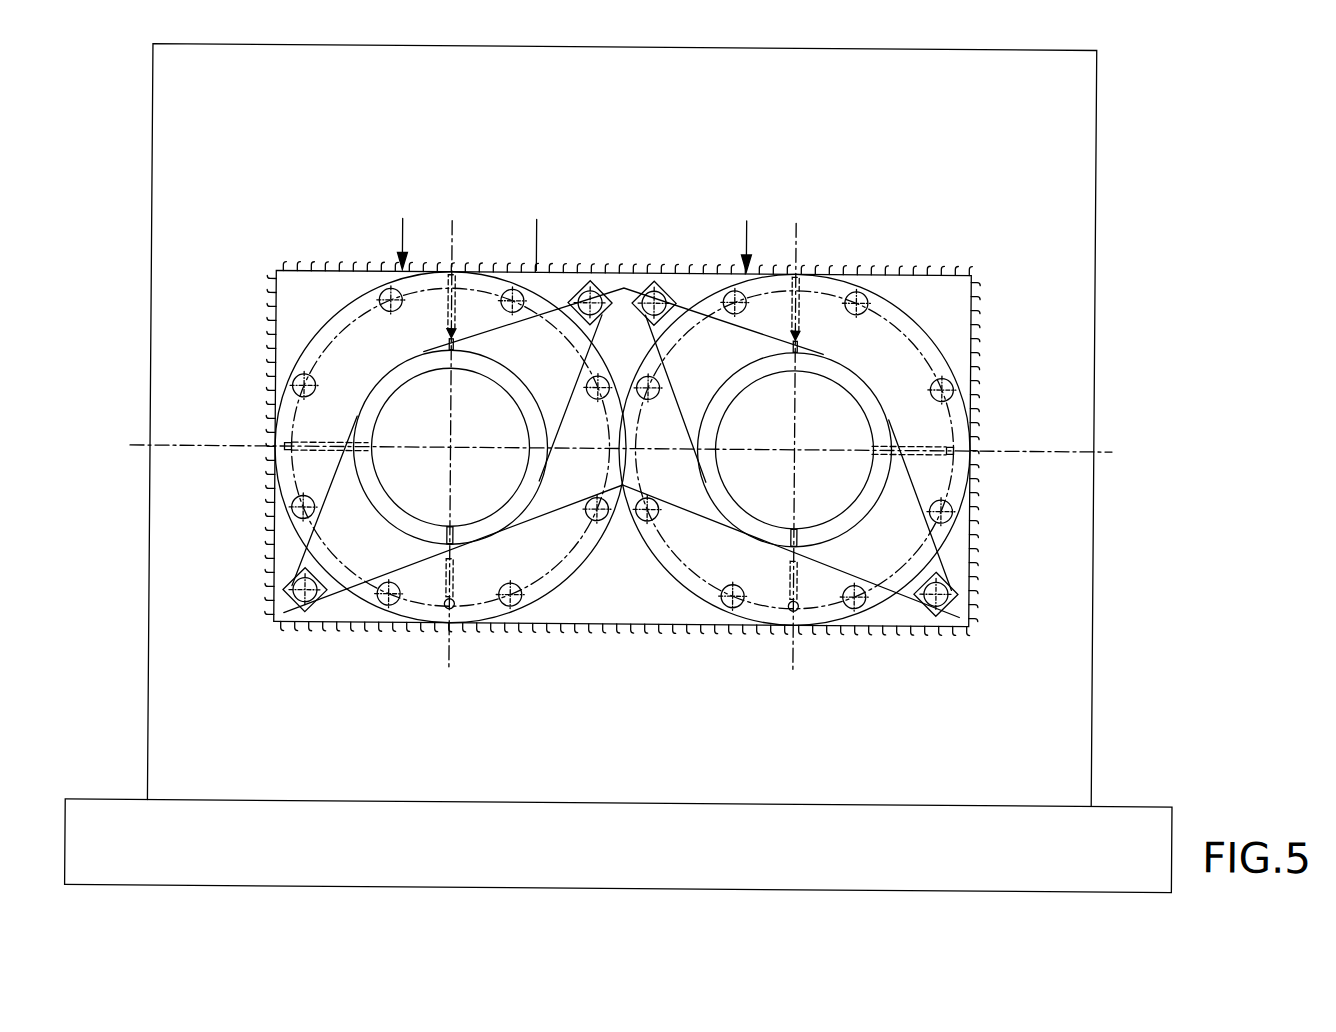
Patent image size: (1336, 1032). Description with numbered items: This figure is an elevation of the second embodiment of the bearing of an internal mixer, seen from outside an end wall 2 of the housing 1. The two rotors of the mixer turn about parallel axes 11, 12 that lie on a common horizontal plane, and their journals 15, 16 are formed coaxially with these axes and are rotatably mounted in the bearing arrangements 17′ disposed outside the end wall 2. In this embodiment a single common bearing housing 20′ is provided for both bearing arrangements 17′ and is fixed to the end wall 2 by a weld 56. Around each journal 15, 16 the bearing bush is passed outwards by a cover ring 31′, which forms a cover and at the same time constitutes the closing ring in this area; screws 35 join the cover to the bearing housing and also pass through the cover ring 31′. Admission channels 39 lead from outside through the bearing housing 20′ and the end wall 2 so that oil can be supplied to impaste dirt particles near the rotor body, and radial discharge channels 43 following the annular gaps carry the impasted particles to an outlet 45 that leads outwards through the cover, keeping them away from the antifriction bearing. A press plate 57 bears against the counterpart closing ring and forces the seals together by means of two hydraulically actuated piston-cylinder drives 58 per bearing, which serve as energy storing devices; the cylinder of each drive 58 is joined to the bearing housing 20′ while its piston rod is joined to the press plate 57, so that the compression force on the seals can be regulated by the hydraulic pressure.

The housing 1 is at (1101, 144).
The end wall 2 is at (1043, 120).
The axis 11 is at (452, 448).
The axis 12 is at (794, 449).
The journal 15 is at (411, 422).
The journal 16 is at (841, 428).
The bearing arrangement 17′ is at (582, 232).
The bearing housing 20′ is at (539, 231).
The cover ring 31′ is at (366, 351).
The screws 35 is at (512, 601).
The admission channel 39 is at (457, 298).
The radial discharge channel 43 is at (325, 450).
The outlet 45 is at (285, 444).
The weld 56 is at (331, 270).
The press plate 57 is at (370, 542).
The piston-cylinder drive 58 is at (590, 280).